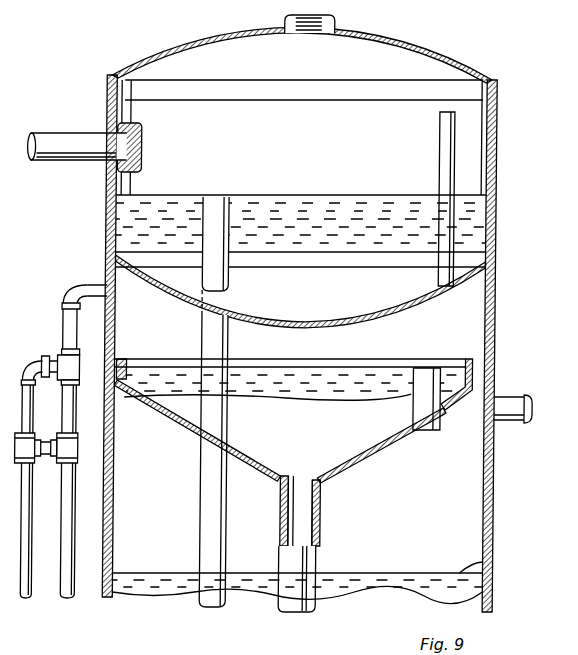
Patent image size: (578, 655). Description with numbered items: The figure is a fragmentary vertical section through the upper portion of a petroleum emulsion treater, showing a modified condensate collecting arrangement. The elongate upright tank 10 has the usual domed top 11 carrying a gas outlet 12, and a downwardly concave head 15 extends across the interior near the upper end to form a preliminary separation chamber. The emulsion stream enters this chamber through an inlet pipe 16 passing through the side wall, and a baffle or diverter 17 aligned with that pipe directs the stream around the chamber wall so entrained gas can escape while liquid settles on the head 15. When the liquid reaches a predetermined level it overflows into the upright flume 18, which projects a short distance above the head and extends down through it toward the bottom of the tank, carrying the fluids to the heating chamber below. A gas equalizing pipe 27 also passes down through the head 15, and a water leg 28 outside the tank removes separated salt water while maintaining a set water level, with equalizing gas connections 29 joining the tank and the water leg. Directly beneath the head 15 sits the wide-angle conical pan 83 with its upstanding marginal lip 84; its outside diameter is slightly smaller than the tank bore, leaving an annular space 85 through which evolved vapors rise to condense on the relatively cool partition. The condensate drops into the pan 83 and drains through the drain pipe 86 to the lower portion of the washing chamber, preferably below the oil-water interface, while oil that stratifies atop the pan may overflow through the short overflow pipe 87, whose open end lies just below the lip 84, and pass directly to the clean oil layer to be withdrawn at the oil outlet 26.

The tank 10 is at (494, 470).
The domed top 11 is at (420, 50).
The gas outlet 12 is at (305, 35).
The downwardly concave head 15 is at (343, 318).
The inlet pipe 16 is at (83, 133).
The baffle or diverter 17 is at (144, 150).
The upright pipe or flume 18 is at (204, 334).
The oil outlet 26 is at (524, 420).
The gas equalizing pipe 27 is at (441, 155).
The water leg 28 is at (65, 512).
The equalizing gas connections 29 is at (66, 291).
The pan 83 is at (385, 440).
The marginal lip 84 is at (476, 365).
The annular space 85 is at (478, 380).
The drain pipe 86 is at (319, 558).
The overflow pipe 87 is at (415, 400).